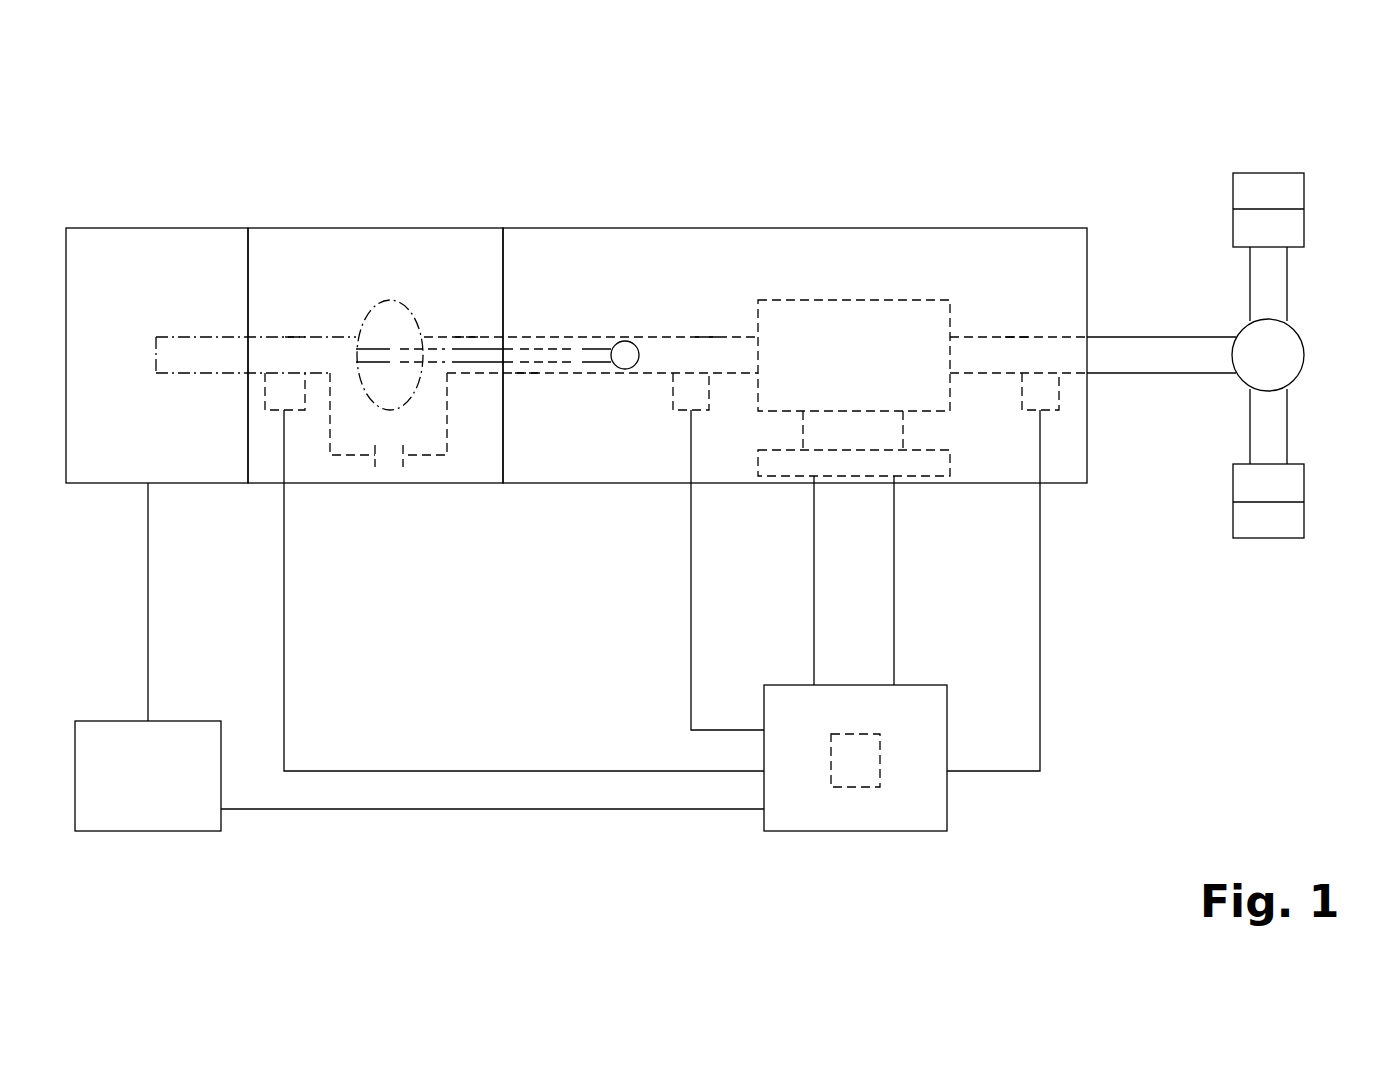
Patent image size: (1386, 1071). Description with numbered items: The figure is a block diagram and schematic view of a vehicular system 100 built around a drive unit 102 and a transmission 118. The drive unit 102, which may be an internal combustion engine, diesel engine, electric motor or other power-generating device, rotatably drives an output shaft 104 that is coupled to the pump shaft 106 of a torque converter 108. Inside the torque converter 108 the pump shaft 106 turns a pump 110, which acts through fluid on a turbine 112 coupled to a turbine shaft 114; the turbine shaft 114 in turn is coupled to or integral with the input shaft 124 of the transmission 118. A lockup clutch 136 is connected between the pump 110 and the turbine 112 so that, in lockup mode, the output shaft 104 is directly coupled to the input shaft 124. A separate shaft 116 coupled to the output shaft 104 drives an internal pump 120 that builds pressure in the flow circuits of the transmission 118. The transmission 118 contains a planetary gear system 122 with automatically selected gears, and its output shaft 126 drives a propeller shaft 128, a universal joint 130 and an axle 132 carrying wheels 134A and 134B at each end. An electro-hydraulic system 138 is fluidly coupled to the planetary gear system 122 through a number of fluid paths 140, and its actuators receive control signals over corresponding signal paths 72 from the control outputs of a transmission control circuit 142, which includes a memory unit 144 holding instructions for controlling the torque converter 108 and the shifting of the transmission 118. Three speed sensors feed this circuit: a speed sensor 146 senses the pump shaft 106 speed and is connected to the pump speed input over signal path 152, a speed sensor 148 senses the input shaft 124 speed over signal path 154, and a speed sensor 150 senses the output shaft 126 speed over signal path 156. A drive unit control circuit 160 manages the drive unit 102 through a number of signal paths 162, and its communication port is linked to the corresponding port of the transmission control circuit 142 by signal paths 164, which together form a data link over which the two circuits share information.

The vehicular system 100 is at (112, 155).
The drive unit 102 is at (186, 228).
The output shaft 104 is at (200, 337).
The pump shaft 106 is at (295, 337).
The torque converter 108 is at (385, 228).
The pump 110 is at (362, 305).
The turbine 112 is at (415, 312).
The turbine shaft 114 is at (465, 337).
The shaft 116 is at (528, 375).
The transmission 118 is at (793, 228).
The internal pump 120 is at (625, 340).
The planetary gear system 122 is at (882, 372).
The input shaft 124 is at (705, 337).
The output shaft 126 is at (1017, 337).
The propeller shaft 128 is at (1160, 337).
The universal joint 130 is at (1300, 375).
The axle 132 is at (1289, 287).
The wheel 134A is at (1268, 173).
The wheel 134B is at (1268, 538).
The lockup clutch 136 is at (403, 456).
The electro-hydraulic system 138 is at (920, 462).
The fluid paths 140 is at (1068, 513).
The transmission control circuit 142 is at (826, 832).
The memory unit 144 is at (867, 787).
The speed sensor 146 is at (262, 393).
The speed sensor 148 is at (683, 390).
The speed sensor 150 is at (1065, 392).
The signal path 152 is at (450, 771).
The signal path 154 is at (691, 613).
The signal path 156 is at (1040, 648).
The drive unit control circuit 160 is at (138, 832).
The signal paths 162 is at (148, 537).
The signal paths 164 is at (402, 810).
The signal paths 72 is at (814, 541).